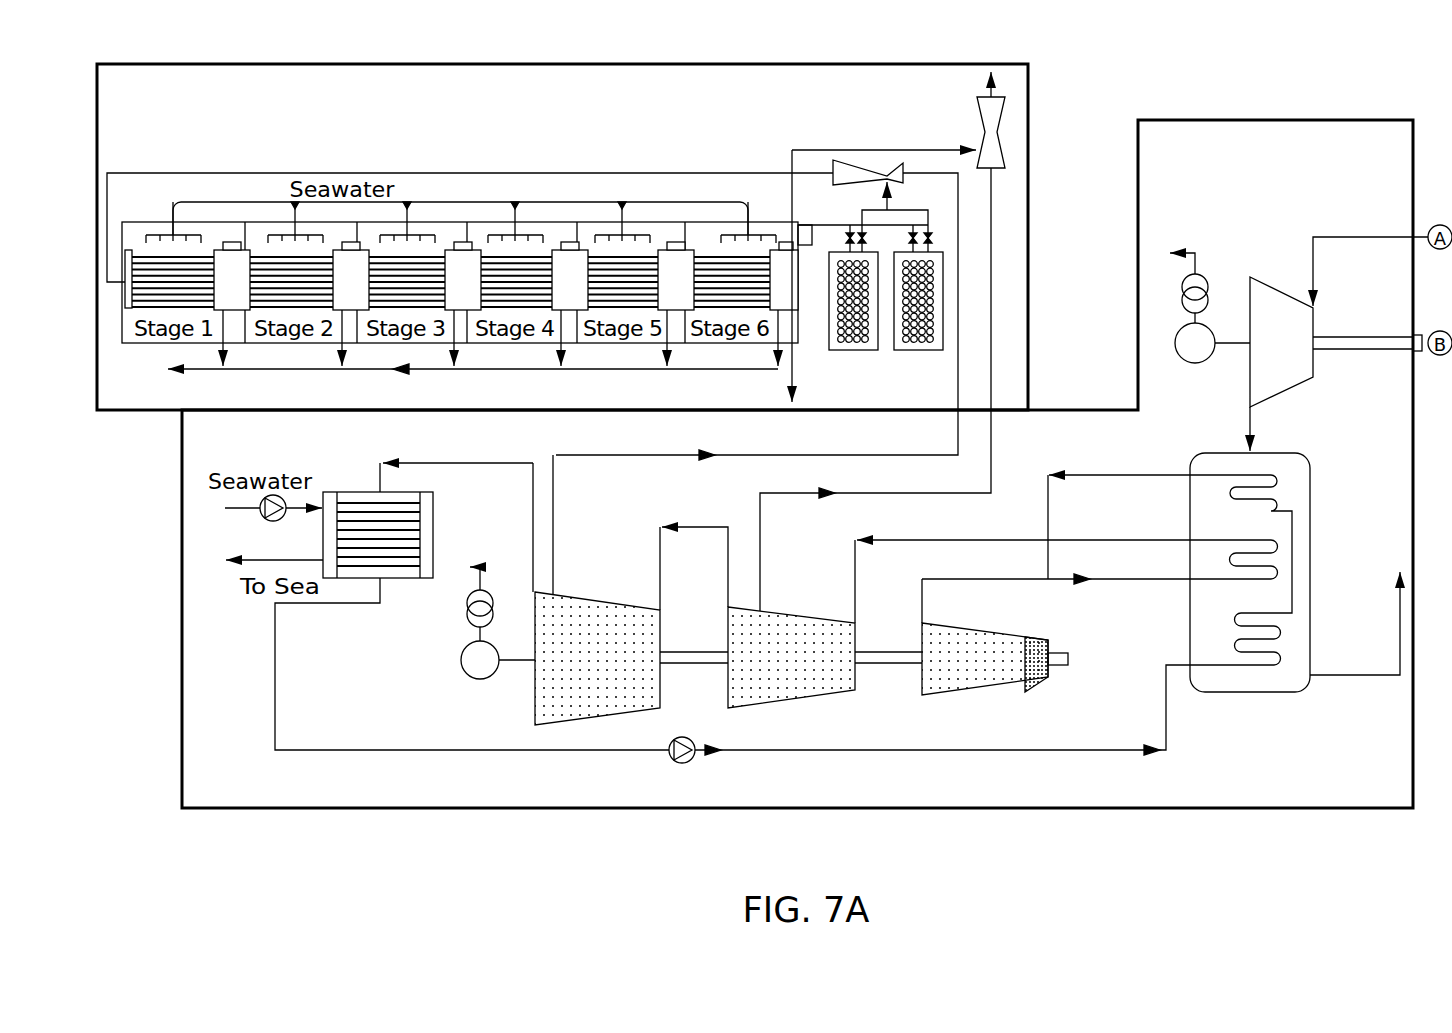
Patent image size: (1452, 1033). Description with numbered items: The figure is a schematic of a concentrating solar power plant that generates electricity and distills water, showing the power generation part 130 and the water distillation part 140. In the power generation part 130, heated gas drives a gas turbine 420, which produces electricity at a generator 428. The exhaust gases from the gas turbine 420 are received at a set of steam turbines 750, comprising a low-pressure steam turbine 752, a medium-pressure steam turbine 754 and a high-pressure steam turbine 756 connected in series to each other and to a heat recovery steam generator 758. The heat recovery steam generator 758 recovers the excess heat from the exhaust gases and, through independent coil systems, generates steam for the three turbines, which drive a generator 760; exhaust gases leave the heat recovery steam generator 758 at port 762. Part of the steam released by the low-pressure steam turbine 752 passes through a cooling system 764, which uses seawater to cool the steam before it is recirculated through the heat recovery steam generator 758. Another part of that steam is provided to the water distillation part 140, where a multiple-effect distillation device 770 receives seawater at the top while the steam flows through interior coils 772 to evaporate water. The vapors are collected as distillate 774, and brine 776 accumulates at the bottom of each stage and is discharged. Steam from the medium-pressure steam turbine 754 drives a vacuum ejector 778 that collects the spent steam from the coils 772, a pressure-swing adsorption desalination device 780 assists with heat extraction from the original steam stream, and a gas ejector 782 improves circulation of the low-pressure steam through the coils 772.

The power generation part 130 is at (1067, 813).
The water distillation part 140 is at (503, 60).
The gas turbine 420 is at (1262, 280).
The generator 428 is at (1175, 343).
The set of steam turbines 750 is at (755, 716).
The low-pressure steam turbine 752 is at (593, 720).
The medium-pressure steam turbine 754 is at (802, 700).
The high-pressure steam turbine 756 is at (993, 680).
The heat recovery steam generator 758 is at (1248, 692).
The generator 760 is at (461, 660).
The port 762 is at (1396, 620).
The cooling system 764 is at (427, 492).
The multiple-effect distillation device 770 is at (557, 186).
The interior coils 772 is at (142, 258).
The distillate 774 is at (211, 369).
The brine 776 is at (788, 378).
The vacuum ejector 778 is at (1005, 125).
The pressure-swing adsorption desalination device 780 is at (853, 350).
The gas ejector 782 is at (867, 160).